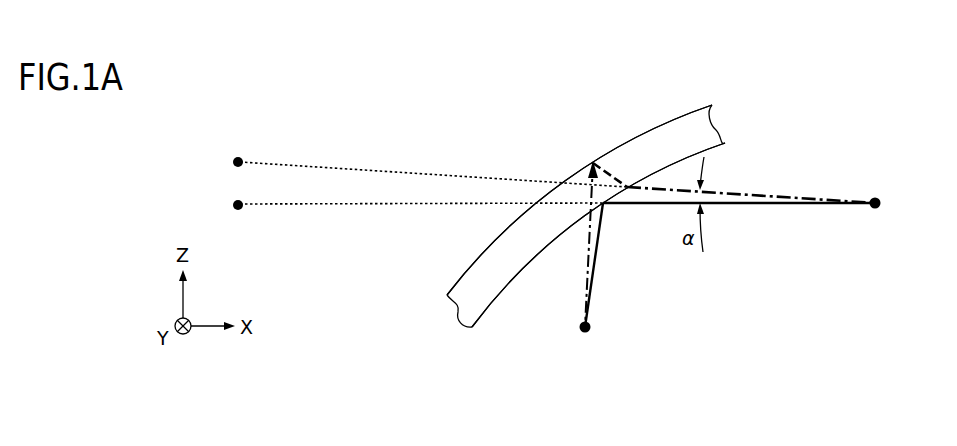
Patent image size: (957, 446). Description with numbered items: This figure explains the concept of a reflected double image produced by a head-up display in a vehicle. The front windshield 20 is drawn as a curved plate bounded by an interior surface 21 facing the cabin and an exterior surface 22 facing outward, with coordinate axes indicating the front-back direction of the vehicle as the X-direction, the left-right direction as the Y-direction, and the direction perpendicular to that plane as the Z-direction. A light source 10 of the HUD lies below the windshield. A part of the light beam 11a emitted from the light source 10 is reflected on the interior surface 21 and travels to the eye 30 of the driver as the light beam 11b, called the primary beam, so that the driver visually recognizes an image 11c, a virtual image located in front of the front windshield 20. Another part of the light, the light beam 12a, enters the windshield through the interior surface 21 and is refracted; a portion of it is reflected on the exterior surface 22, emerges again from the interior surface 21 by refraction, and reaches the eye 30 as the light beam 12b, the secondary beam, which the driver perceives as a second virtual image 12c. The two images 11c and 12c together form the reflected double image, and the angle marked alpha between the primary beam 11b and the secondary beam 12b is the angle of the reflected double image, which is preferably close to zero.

The light source 10 is at (582, 330).
The light beam 11a is at (596, 248).
The light beam (primary beam) 11b is at (730, 205).
The image (virtual image) 11c is at (235, 203).
The light beam 12a is at (583, 245).
The light beam (secondary beam) 12b is at (740, 191).
The image (virtual image) 12c is at (235, 160).
The front windshield 20 is at (714, 110).
The interior surface 21 is at (722, 150).
The exterior surface 22 is at (652, 133).
The eye 30 is at (878, 201).